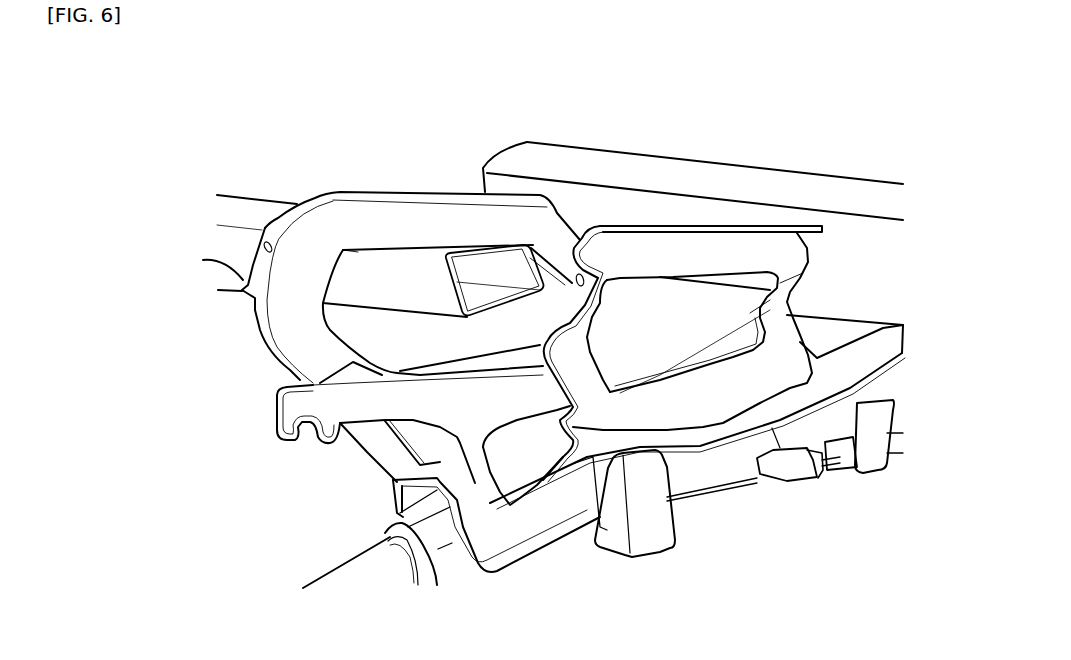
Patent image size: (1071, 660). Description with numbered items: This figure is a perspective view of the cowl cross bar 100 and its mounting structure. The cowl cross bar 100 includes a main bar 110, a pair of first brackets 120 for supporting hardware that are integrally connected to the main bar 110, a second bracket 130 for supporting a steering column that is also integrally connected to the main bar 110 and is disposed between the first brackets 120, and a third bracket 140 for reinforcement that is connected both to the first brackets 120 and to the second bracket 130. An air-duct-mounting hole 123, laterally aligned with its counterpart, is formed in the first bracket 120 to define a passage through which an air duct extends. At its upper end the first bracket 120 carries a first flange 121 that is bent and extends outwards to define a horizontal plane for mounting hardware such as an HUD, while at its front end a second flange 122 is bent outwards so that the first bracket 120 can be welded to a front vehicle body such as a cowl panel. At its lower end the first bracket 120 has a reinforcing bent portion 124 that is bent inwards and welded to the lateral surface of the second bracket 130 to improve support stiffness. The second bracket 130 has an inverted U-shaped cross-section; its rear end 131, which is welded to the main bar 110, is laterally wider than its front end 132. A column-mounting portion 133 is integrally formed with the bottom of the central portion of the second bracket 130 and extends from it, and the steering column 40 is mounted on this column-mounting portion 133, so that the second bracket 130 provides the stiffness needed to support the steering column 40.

The steering column 40 is at (427, 583).
The cowl cross bar 100 is at (763, 168).
The main bar 110 is at (843, 176).
The first bracket for supporting hardware 120 is at (362, 223).
The first flange for assembling hardware 121 is at (438, 197).
The second flange 122 is at (247, 270).
The air-duct-mounting hole 123 is at (363, 253).
The reinforcing bent portion 124 is at (667, 410).
The second bracket for supporting steering column 130 is at (272, 403).
The rear end of second bracket 131 is at (677, 305).
The front end of second bracket 132 is at (358, 381).
The column-mounting portion 133 is at (397, 512).
The third bracket for reinforcement 140 is at (382, 435).